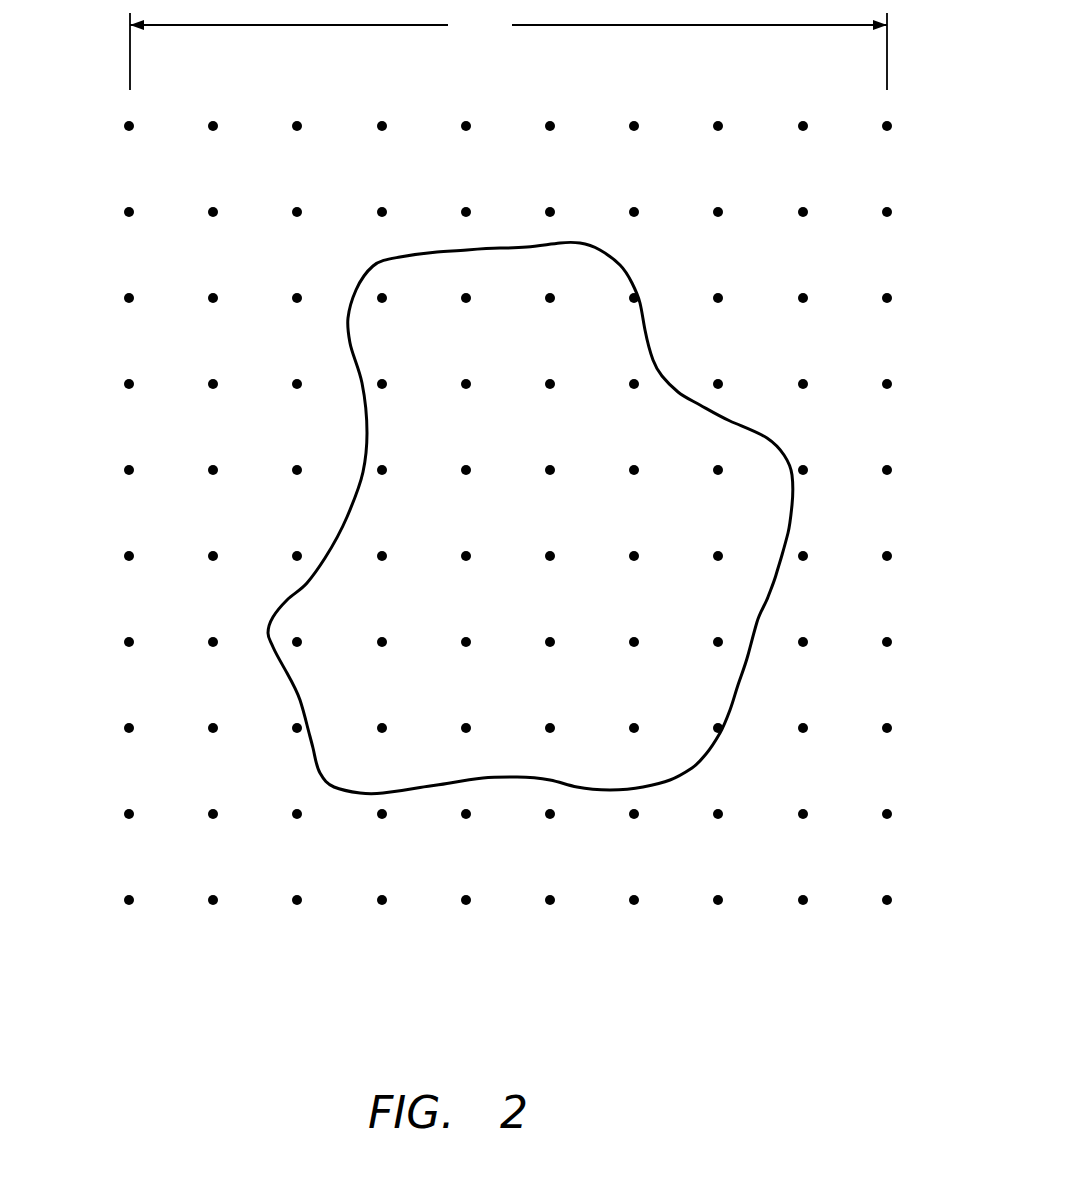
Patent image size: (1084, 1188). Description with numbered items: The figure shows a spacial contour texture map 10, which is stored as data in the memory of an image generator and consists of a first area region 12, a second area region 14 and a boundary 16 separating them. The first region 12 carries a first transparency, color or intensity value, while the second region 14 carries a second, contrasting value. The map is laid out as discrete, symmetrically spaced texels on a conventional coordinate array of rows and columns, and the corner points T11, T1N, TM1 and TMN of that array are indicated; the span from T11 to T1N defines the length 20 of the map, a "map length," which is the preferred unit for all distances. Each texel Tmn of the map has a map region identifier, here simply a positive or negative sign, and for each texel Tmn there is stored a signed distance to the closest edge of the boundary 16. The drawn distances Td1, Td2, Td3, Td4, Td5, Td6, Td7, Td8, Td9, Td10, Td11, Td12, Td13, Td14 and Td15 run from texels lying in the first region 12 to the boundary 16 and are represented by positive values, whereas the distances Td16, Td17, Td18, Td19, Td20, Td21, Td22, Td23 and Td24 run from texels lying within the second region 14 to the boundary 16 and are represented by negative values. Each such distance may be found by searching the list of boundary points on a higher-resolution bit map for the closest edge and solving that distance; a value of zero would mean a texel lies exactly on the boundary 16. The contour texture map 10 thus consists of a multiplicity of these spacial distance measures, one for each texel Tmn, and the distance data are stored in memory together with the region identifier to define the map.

The contour texture map 10 is at (508, 480).
The first area region 12 is at (508, 513).
The second area region 14 is at (516, 556).
The boundary 16 is at (334, 345).
The length of the contour texture map 20 is at (508, 50).
The point T11 is at (126, 103).
The point T1N is at (892, 103).
The point TM1 is at (129, 927).
The point TMN is at (886, 932).
The texel Tmn is at (466, 472).
The signed distance Td1 is at (397, 258).
The signed distance Td2 is at (466, 249).
The signed distance Td3 is at (550, 245).
The signed distance Td4 is at (606, 250).
The signed distance Td5 is at (630, 276).
The signed distance Td6 is at (640, 293).
The signed distance Td7 is at (648, 322).
The signed distance Td8 is at (672, 370).
The signed distance Td9 is at (702, 410).
The signed distance Td10 is at (733, 437).
The signed distance Td11 is at (768, 437).
The signed distance Td12 is at (794, 472).
The signed distance Td13 is at (786, 556).
The signed distance Td14 is at (762, 627).
The signed distance Td15 is at (803, 728).
The signed distance Td16 is at (466, 256).
The signed distance Td17 is at (545, 251).
The signed distance Td18 is at (645, 336).
The signed distance Td19 is at (660, 372).
The signed distance Td20 is at (690, 402).
The signed distance Td21 is at (748, 438).
The signed distance Td22 is at (770, 581).
The signed distance Td23 is at (742, 655).
The signed distance Td24 is at (736, 686).